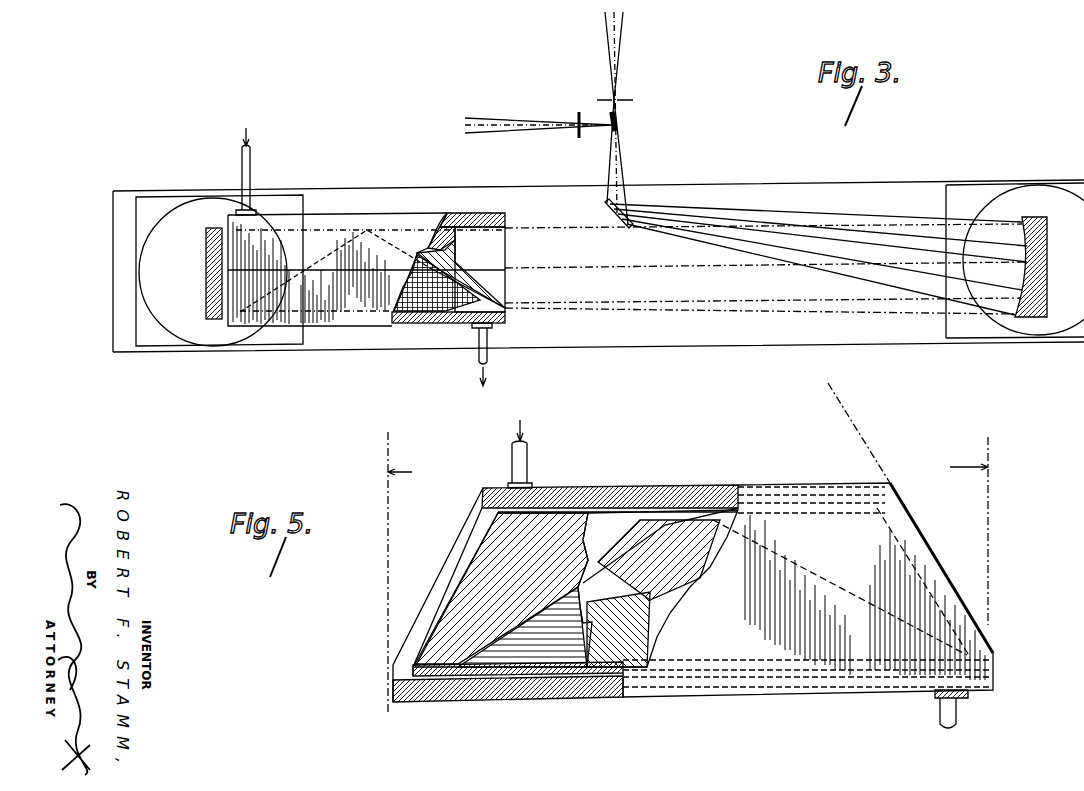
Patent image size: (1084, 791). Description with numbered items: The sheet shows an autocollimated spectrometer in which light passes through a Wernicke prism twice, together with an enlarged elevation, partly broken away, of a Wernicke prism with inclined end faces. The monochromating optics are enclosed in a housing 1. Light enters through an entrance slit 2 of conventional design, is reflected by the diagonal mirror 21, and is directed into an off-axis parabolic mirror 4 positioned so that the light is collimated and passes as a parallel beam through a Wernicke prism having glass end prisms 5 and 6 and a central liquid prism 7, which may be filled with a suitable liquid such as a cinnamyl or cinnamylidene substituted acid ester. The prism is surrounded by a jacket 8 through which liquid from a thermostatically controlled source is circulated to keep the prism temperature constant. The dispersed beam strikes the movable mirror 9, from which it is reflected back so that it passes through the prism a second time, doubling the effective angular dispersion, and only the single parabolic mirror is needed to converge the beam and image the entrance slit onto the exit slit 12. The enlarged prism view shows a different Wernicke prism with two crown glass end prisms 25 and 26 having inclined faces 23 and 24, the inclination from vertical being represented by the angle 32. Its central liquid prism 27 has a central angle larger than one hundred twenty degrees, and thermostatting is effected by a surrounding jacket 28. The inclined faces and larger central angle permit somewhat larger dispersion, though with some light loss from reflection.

In FIG. 3, the housing 1 is at (771, 191).
In FIG. 3, the slit 2 is at (575, 138).
In FIG. 3, the off-axis parabolic mirror 4 is at (1027, 228).
In FIG. 3, the glass end prism 5 is at (496, 246).
In FIG. 3, the glass end prism 6 is at (320, 245).
In FIG. 3, the central liquid prism 7 is at (450, 295).
In FIG. 3, the jacket 8 is at (506, 316).
In FIG. 3, the movable mirror 9 is at (206, 258).
In FIG. 3, the exit slit 12 is at (633, 100).
In FIG. 3, the diagonal mirror 21 is at (617, 121).
In FIG. 5, the inclined face 23 is at (442, 578).
In FIG. 5, the inclined face 24 is at (932, 547).
In FIG. 5, the crown glass end prism 25 is at (483, 549).
In FIG. 5, the crown glass end prism 26 is at (767, 533).
In FIG. 5, the central liquid prism 27 is at (660, 587).
In FIG. 5, the jacket 28 is at (607, 495).
In FIG. 5, the angle 32 is at (480, 497).